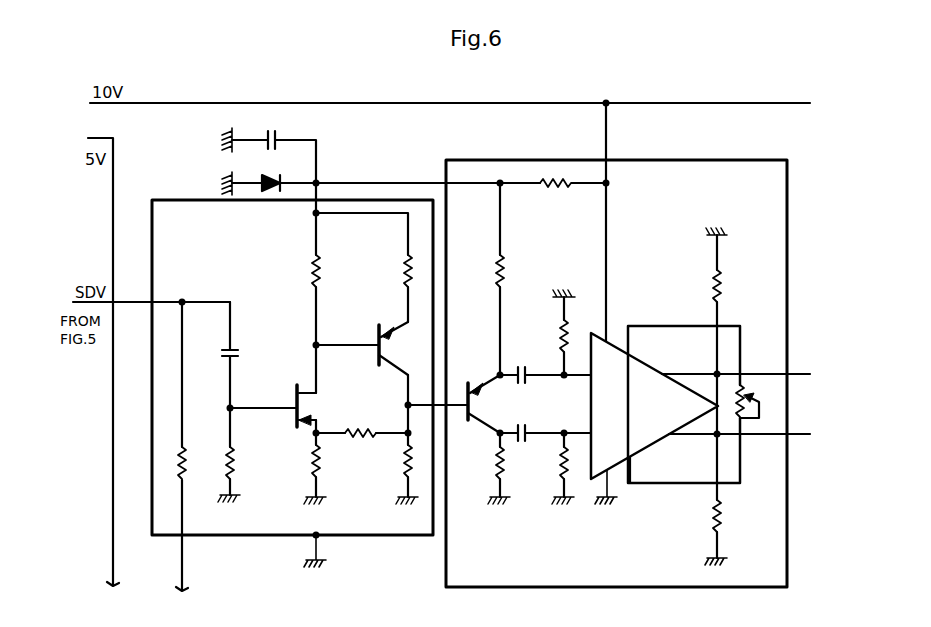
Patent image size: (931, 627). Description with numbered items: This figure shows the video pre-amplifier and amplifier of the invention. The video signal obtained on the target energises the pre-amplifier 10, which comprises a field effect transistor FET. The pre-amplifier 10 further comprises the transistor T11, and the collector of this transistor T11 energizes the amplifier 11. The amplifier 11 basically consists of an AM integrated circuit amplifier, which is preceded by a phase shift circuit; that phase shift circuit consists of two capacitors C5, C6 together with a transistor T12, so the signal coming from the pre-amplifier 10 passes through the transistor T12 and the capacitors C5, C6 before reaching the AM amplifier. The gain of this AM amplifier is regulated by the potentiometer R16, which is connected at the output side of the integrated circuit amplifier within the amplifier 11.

The pre-amplifier 10 is at (163, 408).
The amplifier 11 is at (765, 510).
The transistor T11 is at (372, 348).
The transistor T12 is at (495, 404).
The field effect transistor FET is at (331, 428).
The capacitor C5 is at (545, 363).
The capacitor C6 is at (545, 447).
The potentiometer R16 is at (742, 393).